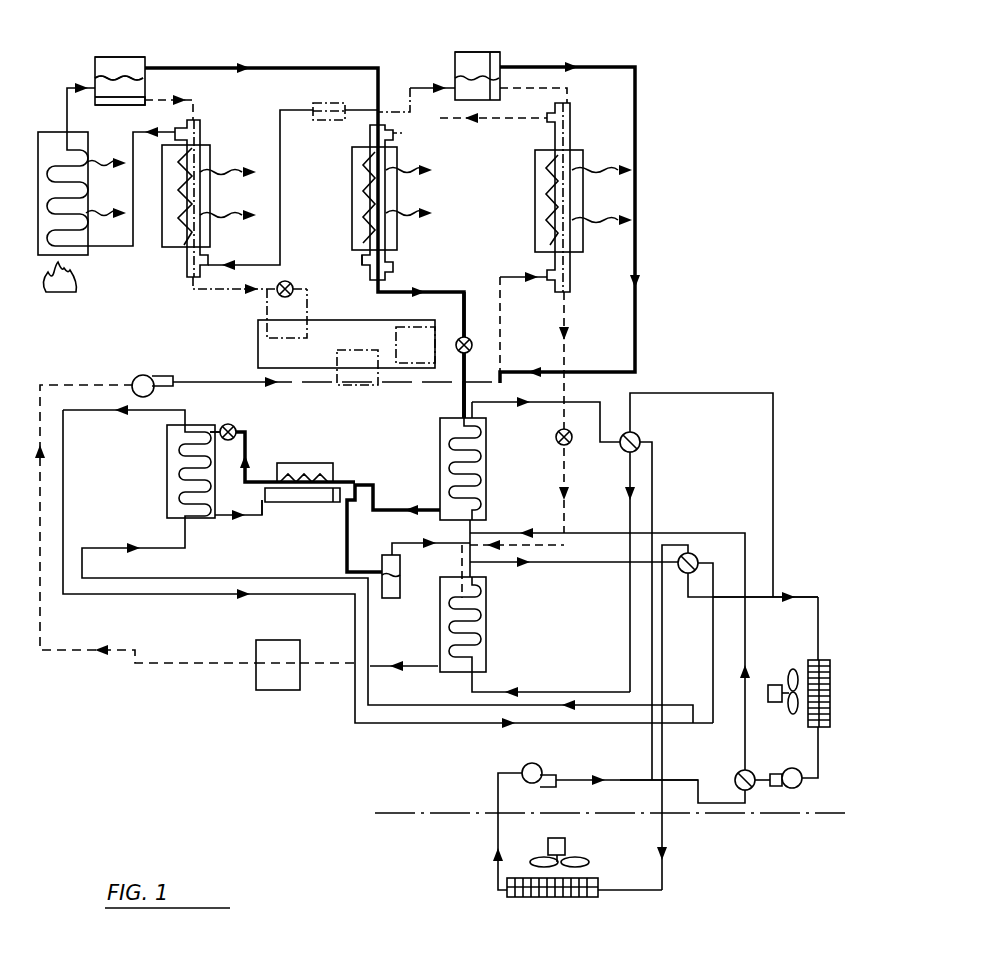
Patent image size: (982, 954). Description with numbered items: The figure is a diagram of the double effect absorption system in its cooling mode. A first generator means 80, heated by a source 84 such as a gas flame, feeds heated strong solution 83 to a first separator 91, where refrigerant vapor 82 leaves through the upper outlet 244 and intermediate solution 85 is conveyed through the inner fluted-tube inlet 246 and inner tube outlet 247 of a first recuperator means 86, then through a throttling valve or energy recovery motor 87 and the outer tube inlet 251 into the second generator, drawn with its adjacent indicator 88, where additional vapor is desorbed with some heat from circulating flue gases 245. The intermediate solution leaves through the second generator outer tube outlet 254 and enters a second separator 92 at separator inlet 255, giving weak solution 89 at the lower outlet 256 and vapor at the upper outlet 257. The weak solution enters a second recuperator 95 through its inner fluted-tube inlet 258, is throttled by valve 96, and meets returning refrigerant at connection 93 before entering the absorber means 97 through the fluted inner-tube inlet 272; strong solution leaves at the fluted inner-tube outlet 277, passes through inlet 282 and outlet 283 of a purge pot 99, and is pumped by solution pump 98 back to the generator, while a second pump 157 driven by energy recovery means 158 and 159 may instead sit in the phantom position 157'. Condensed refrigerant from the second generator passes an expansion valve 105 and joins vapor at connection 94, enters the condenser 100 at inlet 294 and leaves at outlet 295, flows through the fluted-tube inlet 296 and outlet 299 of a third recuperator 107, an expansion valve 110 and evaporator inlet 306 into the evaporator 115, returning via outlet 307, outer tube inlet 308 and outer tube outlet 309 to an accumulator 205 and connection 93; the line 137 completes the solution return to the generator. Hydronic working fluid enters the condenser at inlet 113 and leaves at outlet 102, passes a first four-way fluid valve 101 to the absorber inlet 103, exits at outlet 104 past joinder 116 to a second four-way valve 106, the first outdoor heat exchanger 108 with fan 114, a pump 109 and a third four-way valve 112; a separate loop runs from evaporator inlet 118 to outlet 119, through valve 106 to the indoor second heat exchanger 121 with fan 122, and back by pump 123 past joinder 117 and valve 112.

The first generator means 80 is at (68, 130).
The refrigerant vapor 82 is at (122, 57).
The strong solution 83 is at (108, 83).
The heat source 84 is at (52, 292).
The intermediate solution 85 is at (124, 101).
The first recuperator means 86 is at (210, 162).
The throttling valve or energy recovery motor 87 is at (290, 281).
The heat exchanger 88 is at (352, 190).
The weak solution 89 is at (489, 52).
The first separator 91 is at (133, 57).
The second separator 92 is at (474, 52).
The connection 93 is at (466, 545).
The connection 94 is at (462, 365).
The second recuperator 95 is at (578, 150).
The throttling valve 96 is at (556, 440).
The absorber means 97 is at (440, 615).
The solution pump 98 is at (143, 375).
The purge pot 99 is at (273, 640).
The condenser 100 is at (440, 436).
The first four-way fluid valve 101 is at (638, 434).
The condenser outlet 102 is at (476, 418).
The absorber inlet 103 is at (476, 676).
The absorber outlet 104 is at (486, 582).
The energy recovery motor or expansion valve 105 is at (468, 338).
The second four-way valve 106 is at (690, 575).
The third recuperator 107 is at (287, 504).
The first outdoor heat exchanger 108 is at (830, 660).
The pump 109 is at (794, 788).
The expansion valve 110 is at (238, 431).
The third four-way valve 112 is at (752, 771).
The condenser inlet 113 is at (478, 530).
The fan 114 is at (775, 685).
The evaporator 115 is at (167, 480).
The joinder 116 is at (773, 598).
The joinder 117 is at (650, 778).
The evaporator inlet 118 is at (183, 528).
The evaporator outlet 119 is at (187, 422).
The indoor second heat exchanger 121 is at (588, 897).
The fan 122 is at (579, 857).
The pump 123 is at (526, 764).
The boiler outlet line 137 is at (90, 248).
The second pump 157 is at (321, 352).
The second pump (phantom location) 157' is at (293, 173).
The energy recovery means 158 is at (266, 330).
The additional energy recovery means 159 is at (414, 328).
The accumulator 205 is at (388, 548).
The upper outlet 244 is at (157, 66).
The flue gases 245 is at (650, 188).
The inner fluted-tube inlet 246 is at (195, 119).
The inner tube outlet 247 is at (188, 280).
The outer tube inlet 251 is at (368, 264).
The second generator outer tube outlet 254 is at (400, 135).
The separator inlet 255 is at (450, 85).
The lower outlet 256 is at (501, 86).
The upper outlet 257 is at (504, 66).
The second recuperator inner fluted-tube inlet 258 is at (572, 103).
The fluted inner-tube inlet 272 is at (458, 597).
The fluted inner-tube outlet 277 is at (437, 664).
The purge pot inlet 282 is at (305, 668).
The purge pot outlet 283 is at (256, 663).
The condenser inlet 294 is at (458, 405).
The condenser outlet 295 is at (438, 508).
The fluted-tube inlet 296 is at (356, 488).
The fluted-tube outlet 299 is at (250, 468).
The evaporator inlet 306 is at (222, 427).
The evaporator outlet 307 is at (220, 527).
The outer tube inlet 308 is at (270, 500).
The outer tube outlet 309 is at (340, 502).